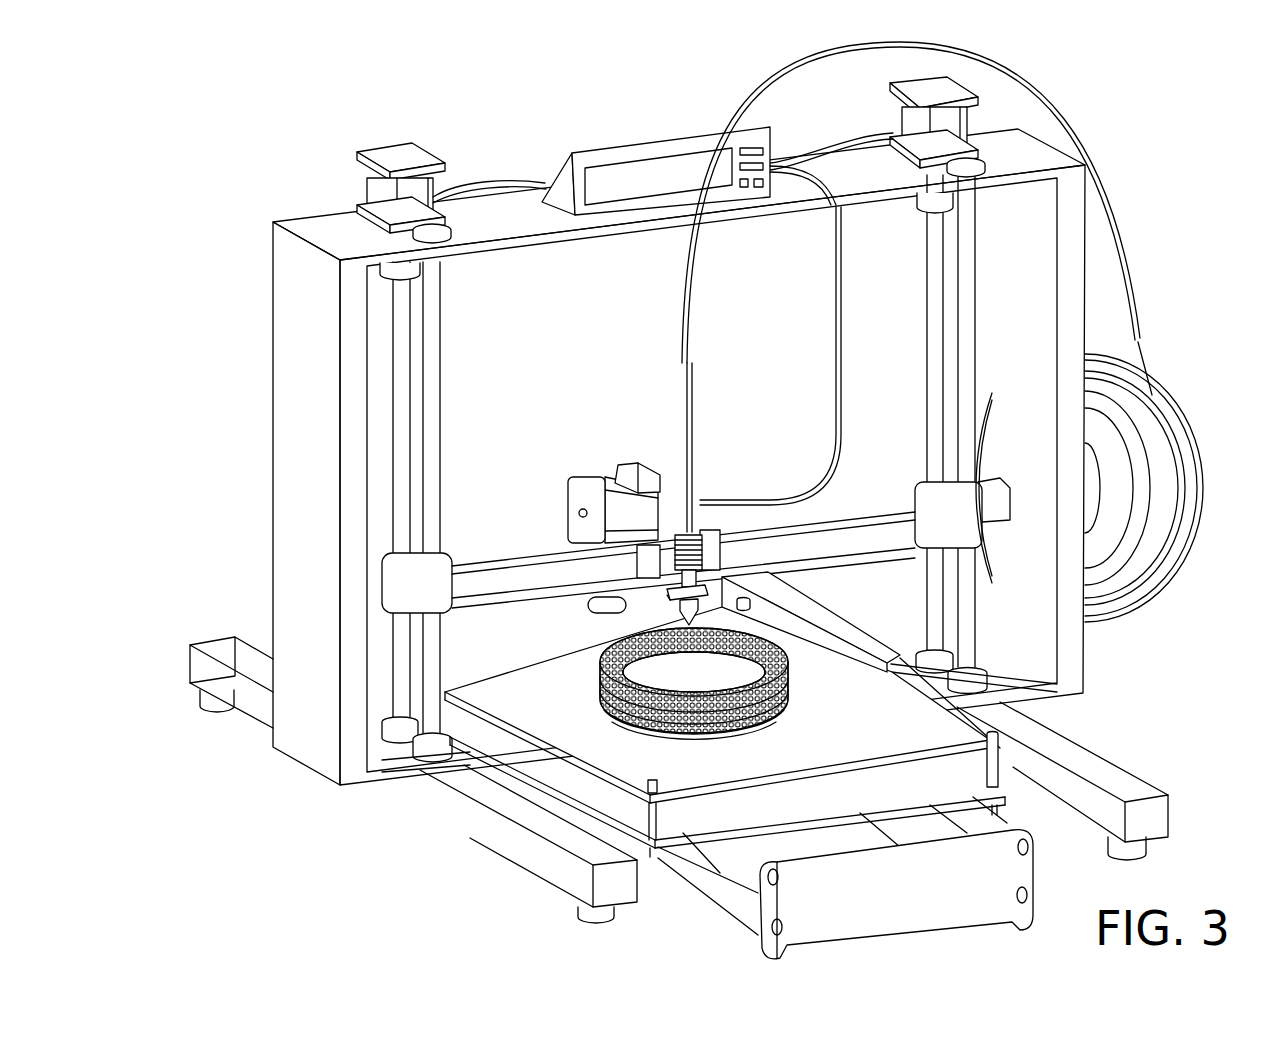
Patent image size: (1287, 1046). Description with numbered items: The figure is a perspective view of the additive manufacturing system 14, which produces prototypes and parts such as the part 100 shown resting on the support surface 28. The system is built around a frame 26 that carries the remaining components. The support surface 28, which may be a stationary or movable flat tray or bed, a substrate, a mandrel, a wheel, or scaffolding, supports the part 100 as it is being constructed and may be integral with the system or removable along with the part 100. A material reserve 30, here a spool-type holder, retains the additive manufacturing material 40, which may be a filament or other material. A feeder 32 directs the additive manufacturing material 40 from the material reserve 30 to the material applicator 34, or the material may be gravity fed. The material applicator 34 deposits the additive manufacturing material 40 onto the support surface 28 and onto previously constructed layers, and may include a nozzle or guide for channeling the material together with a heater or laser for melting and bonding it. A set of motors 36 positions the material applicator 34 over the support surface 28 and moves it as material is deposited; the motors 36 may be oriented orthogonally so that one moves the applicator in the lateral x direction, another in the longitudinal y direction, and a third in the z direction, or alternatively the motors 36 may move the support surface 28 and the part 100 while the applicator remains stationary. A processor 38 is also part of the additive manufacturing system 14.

The additive manufacturing system 14 is at (1177, 88).
The frame 26 is at (222, 477).
The support surface 28 is at (560, 650).
The material reserve 30 is at (1193, 388).
The feeder 32 is at (717, 467).
The material applicator 34 is at (707, 617).
The motors 36 is at (388, 155).
The processor 38 is at (620, 155).
The additive manufacturing material 40 is at (1170, 530).
The part 100 is at (593, 678).